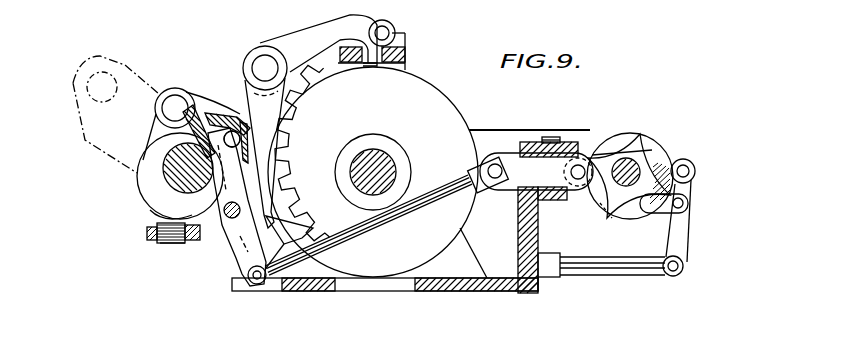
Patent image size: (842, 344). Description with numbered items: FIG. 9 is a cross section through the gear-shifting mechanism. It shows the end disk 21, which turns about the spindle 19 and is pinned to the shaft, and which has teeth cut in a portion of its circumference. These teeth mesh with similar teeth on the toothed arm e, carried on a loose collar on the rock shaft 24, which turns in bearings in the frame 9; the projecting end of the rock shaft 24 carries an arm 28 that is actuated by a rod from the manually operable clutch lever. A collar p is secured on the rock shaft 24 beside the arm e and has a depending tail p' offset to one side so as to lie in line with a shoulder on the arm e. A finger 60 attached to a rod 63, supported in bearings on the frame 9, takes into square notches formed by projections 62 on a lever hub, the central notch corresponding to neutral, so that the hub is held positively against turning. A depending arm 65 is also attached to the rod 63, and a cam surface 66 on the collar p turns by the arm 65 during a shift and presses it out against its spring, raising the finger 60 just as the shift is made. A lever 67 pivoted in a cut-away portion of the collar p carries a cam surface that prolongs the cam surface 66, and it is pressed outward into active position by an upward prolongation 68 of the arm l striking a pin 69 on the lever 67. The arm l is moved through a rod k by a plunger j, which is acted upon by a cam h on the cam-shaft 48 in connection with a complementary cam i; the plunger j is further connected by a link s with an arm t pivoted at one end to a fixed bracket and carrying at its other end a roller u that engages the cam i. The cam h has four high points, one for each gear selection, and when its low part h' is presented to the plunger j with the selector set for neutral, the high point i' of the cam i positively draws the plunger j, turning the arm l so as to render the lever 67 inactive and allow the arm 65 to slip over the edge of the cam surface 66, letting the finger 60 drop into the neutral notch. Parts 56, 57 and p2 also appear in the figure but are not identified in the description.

The frame 9 is at (463, 292).
The spindle 19 is at (370, 150).
The end disk 21 is at (452, 109).
The rock shaft 24 is at (165, 182).
The arm 28 is at (93, 132).
The cam-shaft 48 is at (644, 156).
The roller 56 is at (387, 27).
The bracket 57 is at (407, 50).
The finger 60 is at (310, 33).
The projection 62 is at (321, 73).
The rod 63 is at (263, 62).
The depending arm 65 is at (257, 95).
The cam surface 66 is at (249, 126).
The cam lever 67 is at (172, 128).
The upward prolongation 68 is at (212, 120).
The pin 69 is at (240, 137).
The toothed arm e is at (289, 242).
The cam h is at (616, 124).
The low part of cam h h' is at (654, 128).
The complementary cam i is at (634, 114).
The high point of cam i i' is at (604, 222).
The plunger j is at (532, 175).
The rod k is at (391, 216).
The arm l is at (238, 250).
The collar p is at (148, 212).
The depending tail p' is at (167, 258).
The spring clip p2 is at (153, 229).
The link s is at (655, 215).
The arm t is at (680, 230).
The roller u is at (696, 172).